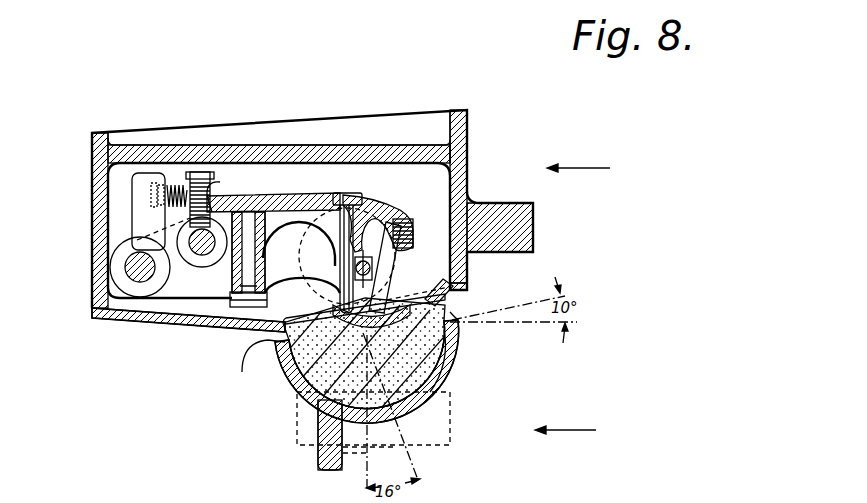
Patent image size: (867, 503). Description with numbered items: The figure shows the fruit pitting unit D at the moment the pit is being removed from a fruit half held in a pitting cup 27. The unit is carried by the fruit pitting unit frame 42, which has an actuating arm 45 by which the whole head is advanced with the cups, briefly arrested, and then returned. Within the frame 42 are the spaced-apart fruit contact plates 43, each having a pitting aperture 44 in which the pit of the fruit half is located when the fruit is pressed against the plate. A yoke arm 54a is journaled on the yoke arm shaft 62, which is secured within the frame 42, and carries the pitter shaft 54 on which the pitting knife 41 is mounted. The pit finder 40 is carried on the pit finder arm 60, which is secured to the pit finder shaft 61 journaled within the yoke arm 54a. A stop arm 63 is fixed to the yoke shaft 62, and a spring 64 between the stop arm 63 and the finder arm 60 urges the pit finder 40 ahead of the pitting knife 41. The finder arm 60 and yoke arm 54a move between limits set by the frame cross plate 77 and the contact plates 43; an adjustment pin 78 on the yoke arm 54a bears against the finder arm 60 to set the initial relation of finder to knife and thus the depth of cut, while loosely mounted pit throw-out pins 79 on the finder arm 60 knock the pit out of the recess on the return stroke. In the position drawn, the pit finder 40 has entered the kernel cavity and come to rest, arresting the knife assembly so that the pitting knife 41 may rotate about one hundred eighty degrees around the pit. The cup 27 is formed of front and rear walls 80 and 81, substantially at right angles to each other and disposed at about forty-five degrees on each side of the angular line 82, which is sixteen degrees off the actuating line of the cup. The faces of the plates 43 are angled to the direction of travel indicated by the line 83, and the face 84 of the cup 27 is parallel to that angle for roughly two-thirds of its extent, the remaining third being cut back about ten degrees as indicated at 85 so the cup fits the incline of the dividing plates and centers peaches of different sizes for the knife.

The pitting cup 27 is at (463, 342).
The pit finder 40 is at (414, 236).
The pitting knife 41 is at (412, 286).
The fruit pitting unit frame 42 is at (470, 140).
The fruit contact plate 43 is at (180, 328).
The pitting aperture 44 is at (301, 270).
The actuating arm 45 is at (527, 219).
The pitter shaft 54 is at (355, 268).
The yoke arm 54a is at (175, 290).
The pit finder arm 60 is at (372, 207).
The pit finder shaft 61 is at (204, 256).
The yoke arm shaft 62 is at (128, 270).
The stop arm 63 is at (137, 201).
The spring 64 is at (172, 184).
The frame cross plate 77 is at (297, 143).
The adjustment pin 78 is at (248, 238).
The pit throw-out pin 79 is at (347, 193).
The front wall 80 is at (297, 372).
The rear wall 81 is at (449, 343).
The angular line 82 is at (408, 433).
The line of direction of travel 83 is at (572, 430).
The face of pitting cup 84 is at (242, 371).
The cut-back portion 85 is at (450, 320).
The fruit pitting unit D is at (82, 151).